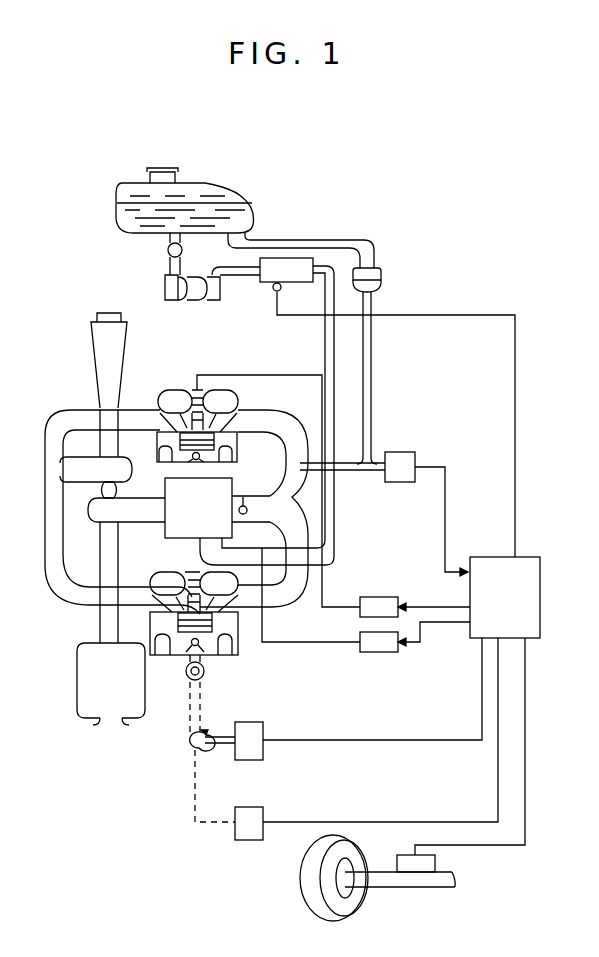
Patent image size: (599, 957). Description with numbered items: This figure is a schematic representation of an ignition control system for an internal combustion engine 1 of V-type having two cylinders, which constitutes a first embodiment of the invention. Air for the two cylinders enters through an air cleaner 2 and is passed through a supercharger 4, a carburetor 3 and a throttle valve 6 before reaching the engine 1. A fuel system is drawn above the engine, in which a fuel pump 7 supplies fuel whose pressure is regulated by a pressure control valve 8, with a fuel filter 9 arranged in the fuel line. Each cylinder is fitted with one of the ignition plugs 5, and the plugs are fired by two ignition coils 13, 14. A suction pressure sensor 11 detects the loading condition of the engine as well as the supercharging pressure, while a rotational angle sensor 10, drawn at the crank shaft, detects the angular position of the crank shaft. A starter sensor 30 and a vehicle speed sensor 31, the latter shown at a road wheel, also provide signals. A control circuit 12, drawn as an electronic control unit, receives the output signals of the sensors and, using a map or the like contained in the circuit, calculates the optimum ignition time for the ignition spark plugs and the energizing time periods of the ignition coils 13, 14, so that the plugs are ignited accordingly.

The internal combustion engine 1 is at (230, 392).
The air cleaner 2 is at (80, 685).
The carburetor 3 is at (172, 488).
The supercharger 4 is at (91, 514).
The ignition plugs 5 is at (193, 396).
The throttle valve 6 is at (248, 509).
The fuel pump 7 is at (283, 262).
The pressure control valve 8 is at (383, 278).
The fuel filter 9 is at (165, 286).
The rotational angle sensor 10 is at (250, 760).
The suction pressure sensor 11 is at (398, 452).
The control circuit 12 is at (492, 557).
The ignition coil 13 is at (380, 597).
The ignition coil 14 is at (378, 652).
The starter sensor 30 is at (249, 840).
The vehicle speed sensor 31 is at (418, 866).